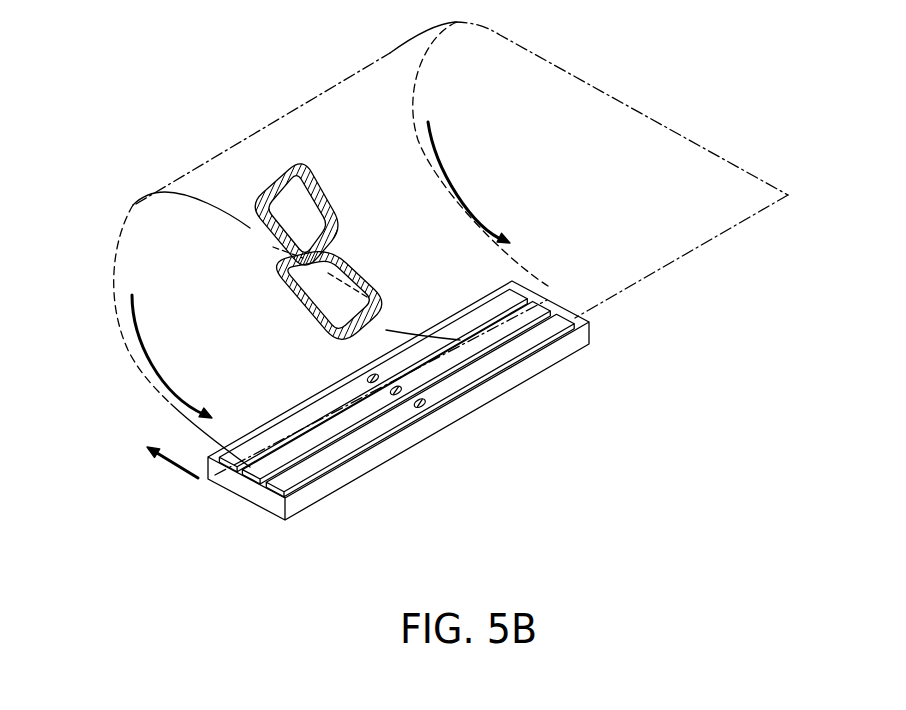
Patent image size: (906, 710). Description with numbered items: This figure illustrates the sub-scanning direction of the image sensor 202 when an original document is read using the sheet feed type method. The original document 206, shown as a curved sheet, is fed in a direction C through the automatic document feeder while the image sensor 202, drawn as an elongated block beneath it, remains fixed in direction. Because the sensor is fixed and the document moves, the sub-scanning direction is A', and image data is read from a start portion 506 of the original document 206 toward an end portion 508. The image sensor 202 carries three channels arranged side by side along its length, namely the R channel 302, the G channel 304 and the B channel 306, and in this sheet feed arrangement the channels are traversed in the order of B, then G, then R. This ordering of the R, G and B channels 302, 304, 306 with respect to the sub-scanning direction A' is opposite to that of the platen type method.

The image sensor 202 is at (352, 436).
The original document 206 is at (125, 217).
The R channel 302 is at (270, 493).
The G channel 304 is at (243, 480).
The B channel 306 is at (218, 471).
The start portion 506 is at (547, 283).
The end portion 508 is at (647, 278).